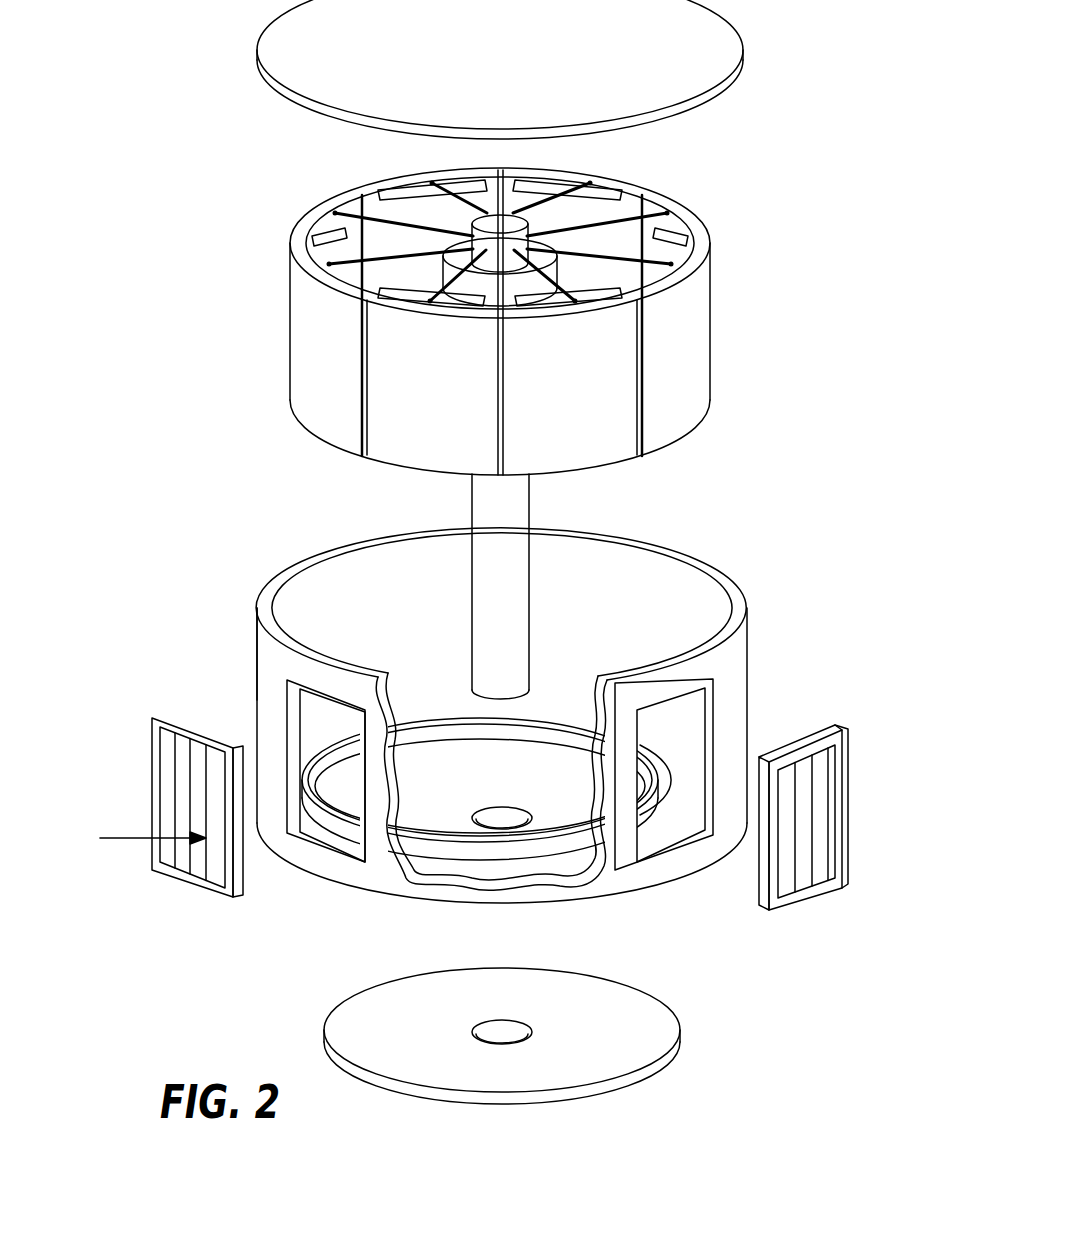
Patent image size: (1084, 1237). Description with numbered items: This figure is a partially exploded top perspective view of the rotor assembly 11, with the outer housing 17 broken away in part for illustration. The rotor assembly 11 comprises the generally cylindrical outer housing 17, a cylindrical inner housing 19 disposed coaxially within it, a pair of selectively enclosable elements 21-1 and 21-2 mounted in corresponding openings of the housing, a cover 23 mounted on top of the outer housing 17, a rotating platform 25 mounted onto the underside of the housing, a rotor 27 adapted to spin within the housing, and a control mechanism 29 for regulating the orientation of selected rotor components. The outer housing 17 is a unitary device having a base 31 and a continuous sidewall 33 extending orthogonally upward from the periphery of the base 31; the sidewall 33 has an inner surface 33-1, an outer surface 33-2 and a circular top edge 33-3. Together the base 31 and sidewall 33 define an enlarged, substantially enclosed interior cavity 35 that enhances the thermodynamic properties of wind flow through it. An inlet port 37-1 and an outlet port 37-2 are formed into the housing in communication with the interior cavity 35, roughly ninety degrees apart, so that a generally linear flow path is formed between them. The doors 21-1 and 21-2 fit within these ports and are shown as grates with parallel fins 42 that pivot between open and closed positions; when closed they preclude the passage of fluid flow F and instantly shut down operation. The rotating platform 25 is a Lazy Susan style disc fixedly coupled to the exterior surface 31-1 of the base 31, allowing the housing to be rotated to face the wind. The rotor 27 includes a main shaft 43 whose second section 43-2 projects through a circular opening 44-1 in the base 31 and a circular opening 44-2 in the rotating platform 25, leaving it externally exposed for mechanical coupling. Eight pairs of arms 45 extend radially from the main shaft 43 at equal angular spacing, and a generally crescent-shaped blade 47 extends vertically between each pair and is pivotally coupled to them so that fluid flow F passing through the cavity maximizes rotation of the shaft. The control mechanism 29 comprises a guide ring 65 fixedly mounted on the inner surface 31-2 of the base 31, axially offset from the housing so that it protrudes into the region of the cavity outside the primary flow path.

The rotor assembly 11 is at (803, 1030).
The outer housing 17 is at (332, 870).
The inner housing 19 is at (345, 279).
The selectively enclosable element 21-1 is at (197, 886).
The selectively enclosable element 21-2 is at (805, 895).
The cover 23 is at (322, 56).
The rotating platform 25 is at (630, 1013).
The rotor 27 is at (780, 236).
The control mechanism 29 is at (447, 850).
The base 31 is at (536, 870).
The exterior surface 31-1 is at (620, 898).
The inner surface 31-2 is at (675, 830).
The sidewall 33 is at (617, 582).
The inner surface 33-1 is at (320, 588).
The outer surface 33-2 is at (256, 658).
The circular top edge 33-3 is at (373, 548).
The interior cavity 35 is at (668, 580).
The inlet port 37-1 is at (306, 735).
The outlet port 37-2 is at (694, 748).
The fins 42 is at (800, 788).
The main shaft 43 is at (487, 523).
The second section 43-2 is at (522, 653).
The circular opening 44-1 is at (496, 818).
The circular opening 44-2 is at (492, 1030).
The arms 45 is at (437, 183).
The blade 47 is at (427, 431).
The guide ring 65 is at (421, 718).
The fluid flow F is at (140, 840).